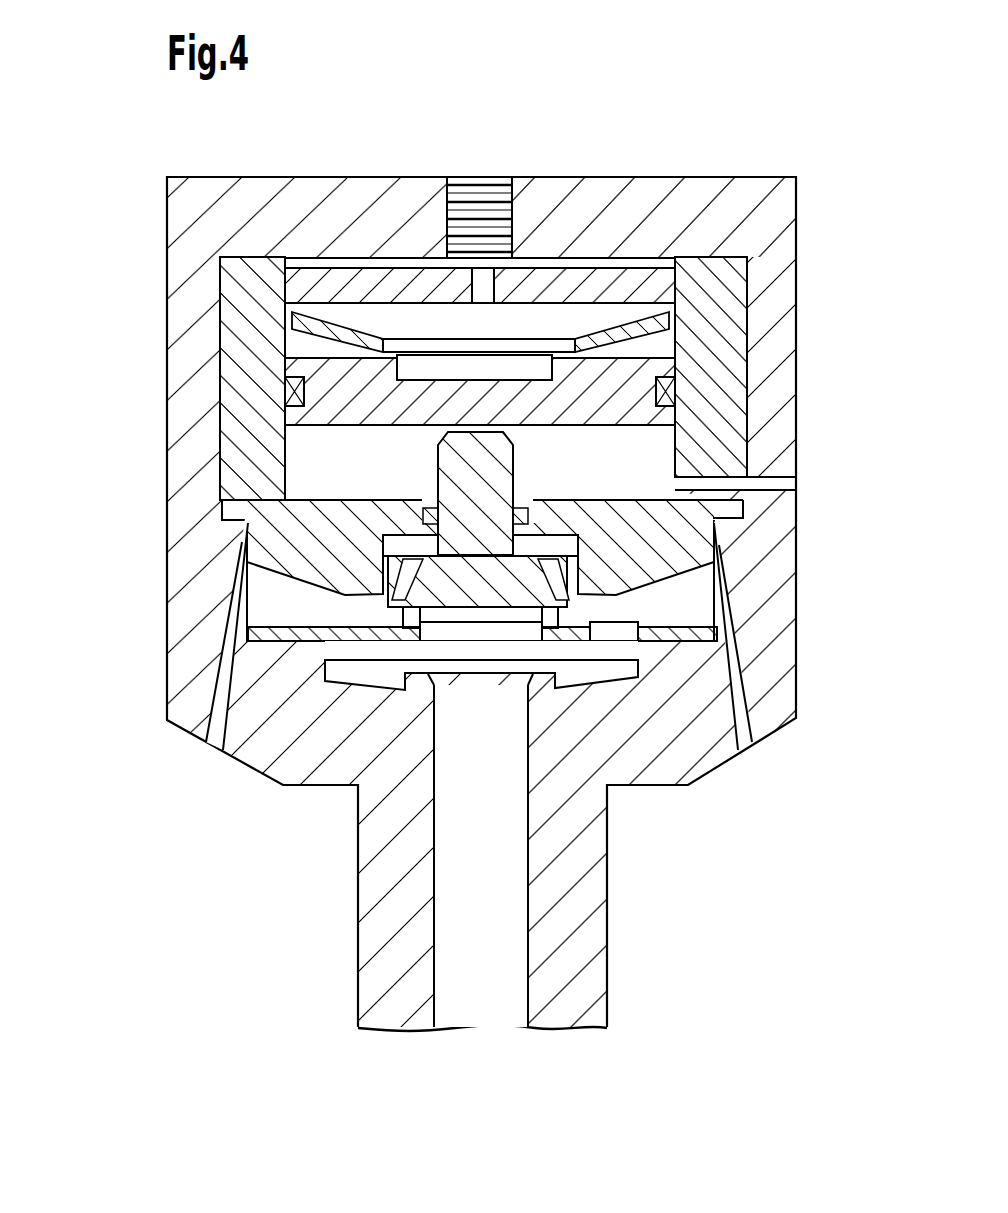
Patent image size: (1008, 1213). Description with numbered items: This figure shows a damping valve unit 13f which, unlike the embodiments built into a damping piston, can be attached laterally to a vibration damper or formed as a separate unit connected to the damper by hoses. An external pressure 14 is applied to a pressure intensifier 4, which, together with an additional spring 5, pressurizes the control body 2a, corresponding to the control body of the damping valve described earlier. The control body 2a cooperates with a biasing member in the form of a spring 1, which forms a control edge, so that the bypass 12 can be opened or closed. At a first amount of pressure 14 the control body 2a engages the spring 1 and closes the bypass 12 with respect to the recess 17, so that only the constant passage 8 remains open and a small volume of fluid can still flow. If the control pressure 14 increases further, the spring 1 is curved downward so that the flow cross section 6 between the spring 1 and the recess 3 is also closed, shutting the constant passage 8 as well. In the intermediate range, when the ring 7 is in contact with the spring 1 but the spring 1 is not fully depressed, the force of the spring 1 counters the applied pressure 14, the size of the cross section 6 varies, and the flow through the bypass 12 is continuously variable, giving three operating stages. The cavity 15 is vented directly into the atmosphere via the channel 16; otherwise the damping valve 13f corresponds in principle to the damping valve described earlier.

The spring 1 is at (418, 649).
The valve stem 2a is at (497, 470).
The recess 3 is at (243, 733).
The pressure intensifier 4 is at (650, 367).
The additional spring 5 is at (297, 323).
The flow cross section 6 is at (367, 672).
The ring 7 is at (560, 613).
The constant passage 8 is at (637, 640).
The bypass 12 is at (450, 940).
The damping valve unit 13f is at (150, 467).
The external pressure 14 is at (477, 140).
The cavity 15 is at (307, 443).
The channel 16 is at (770, 485).
The recess 17 is at (728, 661).